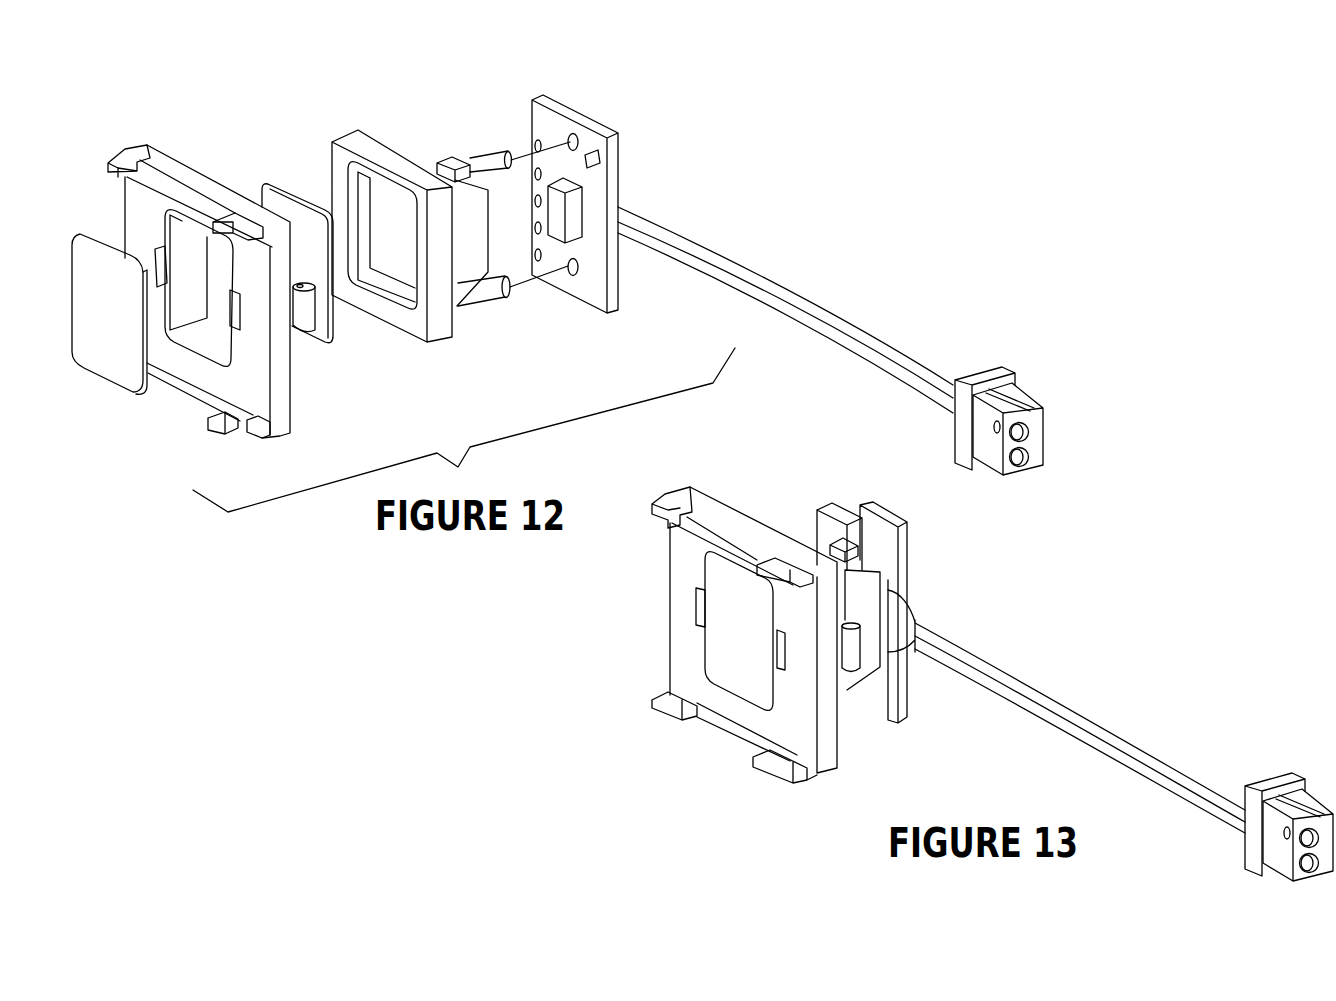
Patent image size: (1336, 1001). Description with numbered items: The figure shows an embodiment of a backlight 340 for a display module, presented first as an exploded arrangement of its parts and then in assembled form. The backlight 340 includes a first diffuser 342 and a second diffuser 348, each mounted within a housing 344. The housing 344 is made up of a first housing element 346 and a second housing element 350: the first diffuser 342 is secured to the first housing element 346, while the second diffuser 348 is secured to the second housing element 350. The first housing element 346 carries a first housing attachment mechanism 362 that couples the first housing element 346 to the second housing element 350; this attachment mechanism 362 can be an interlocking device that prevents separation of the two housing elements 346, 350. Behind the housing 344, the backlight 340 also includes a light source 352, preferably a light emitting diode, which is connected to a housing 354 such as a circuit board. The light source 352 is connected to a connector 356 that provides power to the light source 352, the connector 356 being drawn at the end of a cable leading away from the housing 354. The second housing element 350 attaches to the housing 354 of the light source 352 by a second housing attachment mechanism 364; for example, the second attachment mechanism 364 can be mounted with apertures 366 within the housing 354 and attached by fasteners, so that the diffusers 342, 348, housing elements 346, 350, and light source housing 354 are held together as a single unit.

In FIG. 12, the backlight 340 is at (445, 92).
In FIG. 13, the backlight 340 is at (1050, 668).
In FIG. 12, the first diffuser 342 is at (88, 232).
In FIG. 13, the first diffuser 342 is at (710, 663).
In FIG. 12, the housing 344 is at (90, 117).
In FIG. 12, the first housing element 346 is at (160, 158).
In FIG. 13, the first housing element 346 is at (717, 490).
In FIG. 12, the second diffuser 348 is at (267, 180).
In FIG. 12, the second housing element 350 is at (355, 130).
In FIG. 13, the second housing element 350 is at (863, 587).
In FIG. 12, the light source 352 is at (620, 247).
In FIG. 12, the housing 354 is at (597, 110).
In FIG. 13, the housing 354 is at (906, 687).
In FIG. 12, the connector 356 is at (750, 275).
In FIG. 13, the connector 356 is at (1128, 743).
In FIG. 12, the first housing attachment mechanism 362 is at (305, 312).
In FIG. 13, the first housing attachment mechanism 362 is at (851, 647).
In FIG. 12, the second housing attachment mechanism 364 is at (500, 293).
In FIG. 12, the apertures 366 is at (566, 140).